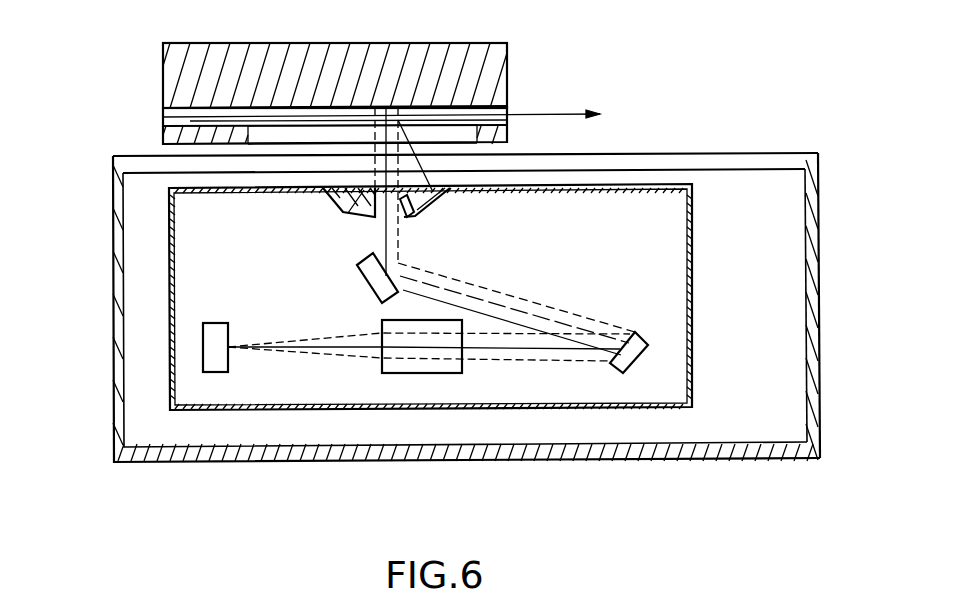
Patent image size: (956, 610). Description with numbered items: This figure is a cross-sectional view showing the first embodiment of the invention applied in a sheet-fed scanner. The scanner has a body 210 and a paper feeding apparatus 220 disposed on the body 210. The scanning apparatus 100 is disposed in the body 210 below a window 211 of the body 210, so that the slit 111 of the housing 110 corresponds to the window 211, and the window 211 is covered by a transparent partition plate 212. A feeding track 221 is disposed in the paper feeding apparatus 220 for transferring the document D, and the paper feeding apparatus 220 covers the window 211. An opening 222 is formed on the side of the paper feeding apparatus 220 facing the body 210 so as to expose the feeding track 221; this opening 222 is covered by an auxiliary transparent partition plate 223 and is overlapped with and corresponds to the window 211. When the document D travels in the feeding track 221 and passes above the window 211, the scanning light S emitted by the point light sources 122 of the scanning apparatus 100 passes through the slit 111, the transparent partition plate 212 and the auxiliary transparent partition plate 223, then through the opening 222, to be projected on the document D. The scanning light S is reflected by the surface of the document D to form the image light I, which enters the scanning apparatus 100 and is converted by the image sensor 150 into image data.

The scanning apparatus 100 is at (160, 313).
The housing 110 is at (693, 285).
The slit 111 is at (382, 215).
The point light sources 122 is at (402, 210).
The image sensor 150 is at (215, 328).
The body 210 is at (813, 275).
The window 211 is at (805, 157).
The transparent partition plate 212 is at (740, 160).
The paper feeding apparatus 220 is at (497, 70).
The feeding track 221 is at (507, 107).
The opening 222 is at (485, 142).
The auxiliary transparent partition plate 223 is at (273, 138).
The document D is at (163, 117).
The scanning light S is at (443, 187).
The image light I is at (525, 307).